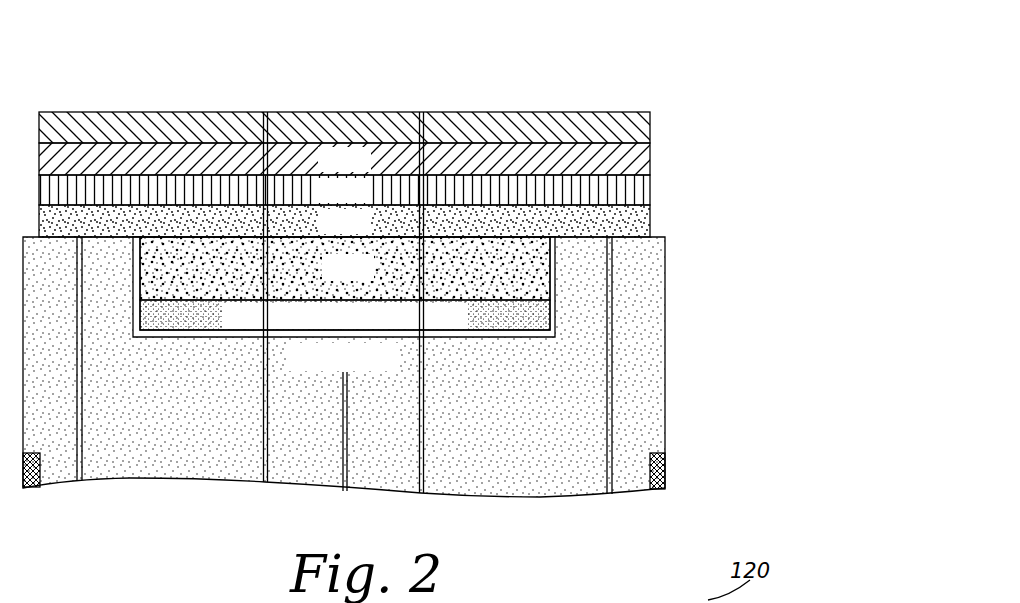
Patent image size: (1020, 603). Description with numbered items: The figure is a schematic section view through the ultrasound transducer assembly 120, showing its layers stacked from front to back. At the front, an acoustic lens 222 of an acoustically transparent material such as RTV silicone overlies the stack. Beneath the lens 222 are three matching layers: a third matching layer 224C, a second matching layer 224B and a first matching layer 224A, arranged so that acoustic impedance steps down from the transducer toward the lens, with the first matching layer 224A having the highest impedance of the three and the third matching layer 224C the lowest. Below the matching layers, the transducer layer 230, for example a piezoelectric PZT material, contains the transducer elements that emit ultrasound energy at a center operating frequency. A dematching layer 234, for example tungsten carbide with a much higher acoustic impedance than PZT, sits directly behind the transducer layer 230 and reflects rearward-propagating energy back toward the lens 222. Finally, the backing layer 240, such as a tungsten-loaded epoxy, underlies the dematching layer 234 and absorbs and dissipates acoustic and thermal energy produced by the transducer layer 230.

The transducer assembly 120 is at (618, 62).
The acoustic lens 222 is at (640, 128).
The third matching layer 224C is at (640, 160).
The second matching layer 224B is at (640, 192).
The first matching layer 224A is at (640, 222).
The transducer layer 230 is at (532, 282).
The dematching layer 234 is at (532, 317).
The backing layer 240 is at (665, 370).